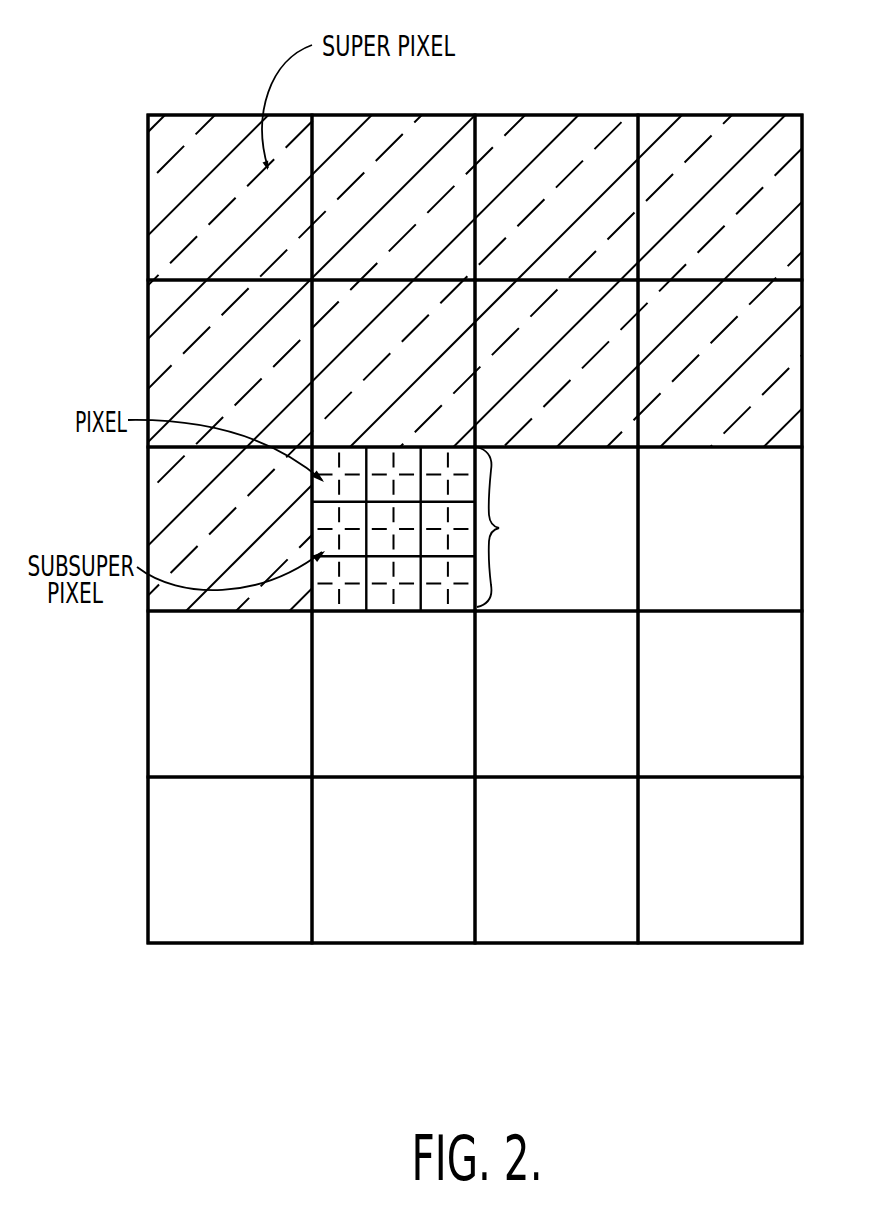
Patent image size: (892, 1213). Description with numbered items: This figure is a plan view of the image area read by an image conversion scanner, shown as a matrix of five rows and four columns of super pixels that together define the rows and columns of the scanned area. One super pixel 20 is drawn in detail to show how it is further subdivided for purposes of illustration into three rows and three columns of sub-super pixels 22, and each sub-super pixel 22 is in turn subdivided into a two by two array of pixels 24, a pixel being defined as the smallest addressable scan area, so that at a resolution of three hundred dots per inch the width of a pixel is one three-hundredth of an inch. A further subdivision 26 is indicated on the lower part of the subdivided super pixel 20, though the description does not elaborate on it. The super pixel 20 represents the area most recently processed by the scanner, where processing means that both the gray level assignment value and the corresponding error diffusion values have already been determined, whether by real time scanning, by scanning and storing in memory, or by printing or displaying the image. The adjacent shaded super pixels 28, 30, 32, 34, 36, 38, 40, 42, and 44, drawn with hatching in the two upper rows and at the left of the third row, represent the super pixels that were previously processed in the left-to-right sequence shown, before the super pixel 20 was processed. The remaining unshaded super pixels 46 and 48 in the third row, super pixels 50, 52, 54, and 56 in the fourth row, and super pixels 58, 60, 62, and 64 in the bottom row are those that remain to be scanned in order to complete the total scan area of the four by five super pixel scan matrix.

The super pixel 20 is at (793, 113).
The sub-super pixel 22 is at (312, 497).
The pixel 24 is at (311, 494).
The subsuper pixel 26 is at (322, 596).
The super pixel 28 is at (191, 114).
The super pixel 30 is at (342, 113).
The super pixel 32 is at (499, 113).
The super pixel 34 is at (627, 114).
The super pixel 36 is at (146, 373).
The super pixel 38 is at (393, 363).
The super pixel 40 is at (556, 363).
The super pixel 42 is at (720, 363).
The super pixel 44 is at (230, 529).
The super pixel 46 is at (556, 529).
The super pixel 48 is at (720, 529).
The super pixel 50 is at (230, 694).
The super pixel 52 is at (393, 694).
The super pixel 54 is at (556, 694).
The super pixel 56 is at (720, 694).
The super pixel 58 is at (230, 860).
The super pixel 60 is at (393, 860).
The super pixel 62 is at (556, 860).
The super pixel 64 is at (720, 860).